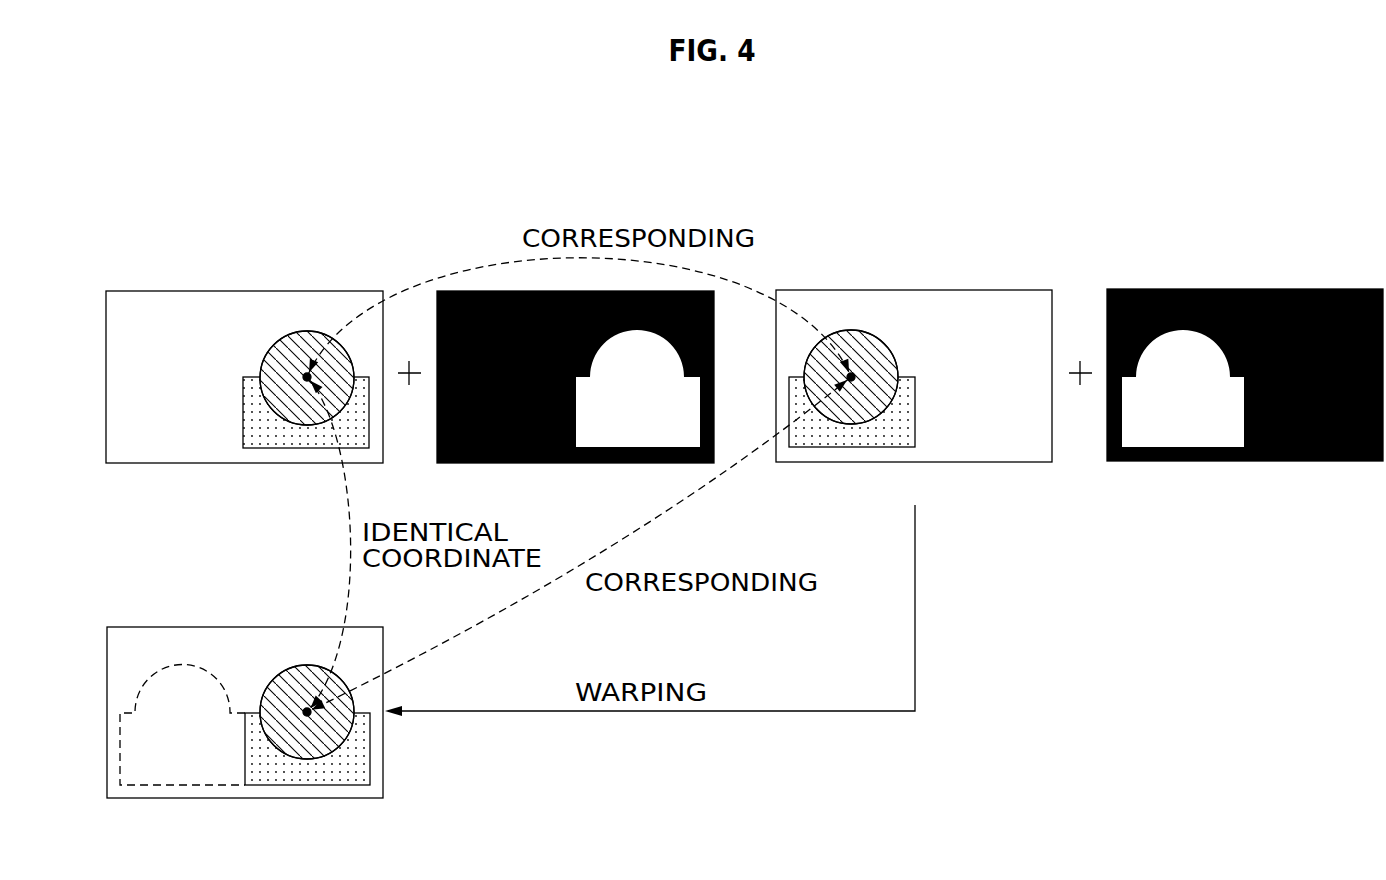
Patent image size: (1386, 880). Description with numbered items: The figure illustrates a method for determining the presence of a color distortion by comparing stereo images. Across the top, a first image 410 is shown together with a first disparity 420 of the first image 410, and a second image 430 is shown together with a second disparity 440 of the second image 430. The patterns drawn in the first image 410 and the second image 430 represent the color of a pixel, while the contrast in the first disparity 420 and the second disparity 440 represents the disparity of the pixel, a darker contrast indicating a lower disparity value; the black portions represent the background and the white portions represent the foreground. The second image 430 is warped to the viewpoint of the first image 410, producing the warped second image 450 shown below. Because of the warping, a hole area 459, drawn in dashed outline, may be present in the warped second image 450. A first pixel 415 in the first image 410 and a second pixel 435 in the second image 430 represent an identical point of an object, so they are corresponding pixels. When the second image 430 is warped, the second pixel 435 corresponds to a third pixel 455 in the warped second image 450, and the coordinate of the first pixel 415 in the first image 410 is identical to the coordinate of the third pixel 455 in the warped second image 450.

The first image 410 is at (240, 290).
The first pixel 415 is at (307, 374).
The first disparity 420 is at (498, 290).
The second image 430 is at (910, 288).
The second pixel 435 is at (851, 373).
The second disparity 440 is at (1242, 287).
The warped second image 450 is at (242, 627).
The third pixel 455 is at (303, 708).
The hole area 459 is at (183, 663).